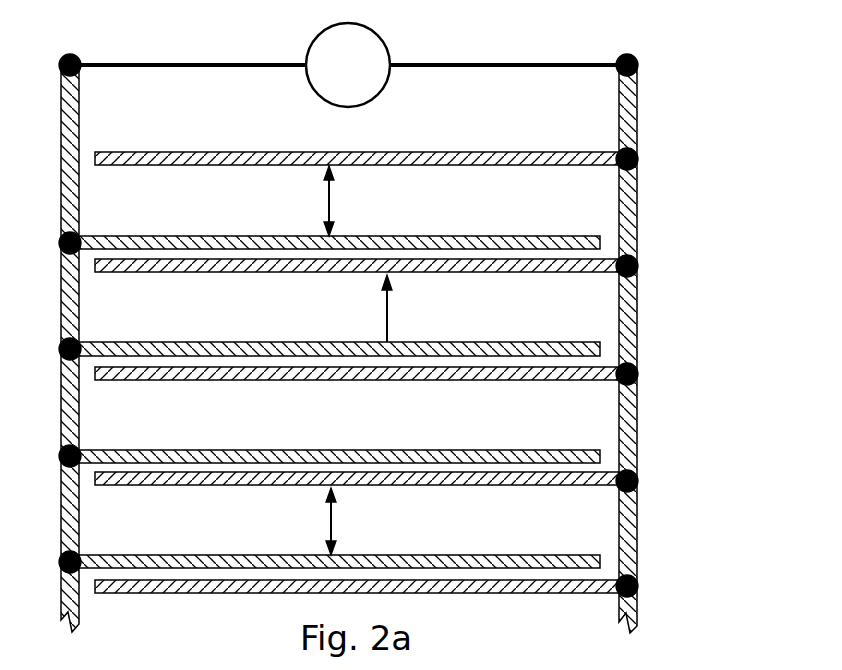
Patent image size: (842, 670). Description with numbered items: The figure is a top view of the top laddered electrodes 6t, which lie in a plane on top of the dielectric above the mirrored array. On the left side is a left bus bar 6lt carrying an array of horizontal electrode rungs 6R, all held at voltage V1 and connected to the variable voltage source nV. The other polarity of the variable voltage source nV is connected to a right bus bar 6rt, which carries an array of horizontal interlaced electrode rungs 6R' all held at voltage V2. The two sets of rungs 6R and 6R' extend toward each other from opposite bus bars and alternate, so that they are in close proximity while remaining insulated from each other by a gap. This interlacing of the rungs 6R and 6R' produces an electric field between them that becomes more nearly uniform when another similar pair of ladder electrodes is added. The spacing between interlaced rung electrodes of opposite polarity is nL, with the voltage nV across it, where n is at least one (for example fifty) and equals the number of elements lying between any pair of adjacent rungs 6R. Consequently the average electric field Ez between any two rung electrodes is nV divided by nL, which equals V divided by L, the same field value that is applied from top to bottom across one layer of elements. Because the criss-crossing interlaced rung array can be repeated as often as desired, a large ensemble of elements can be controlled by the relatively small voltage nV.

The top laddered electrodes 6t is at (410, 349).
The left bus bar 6lt is at (79, 202).
The right bus bar 6rt is at (618, 208).
The horizontal electrode rungs 6R is at (339, 402).
The interlaced electrode rungs 6R' is at (357, 372).
The variable voltage source nV is at (348, 65).
The voltage V1 is at (51, 298).
The voltage V2 is at (643, 310).
The spacing between interlaced rung electrodes nL is at (352, 360).
The electric field Ez is at (408, 308).